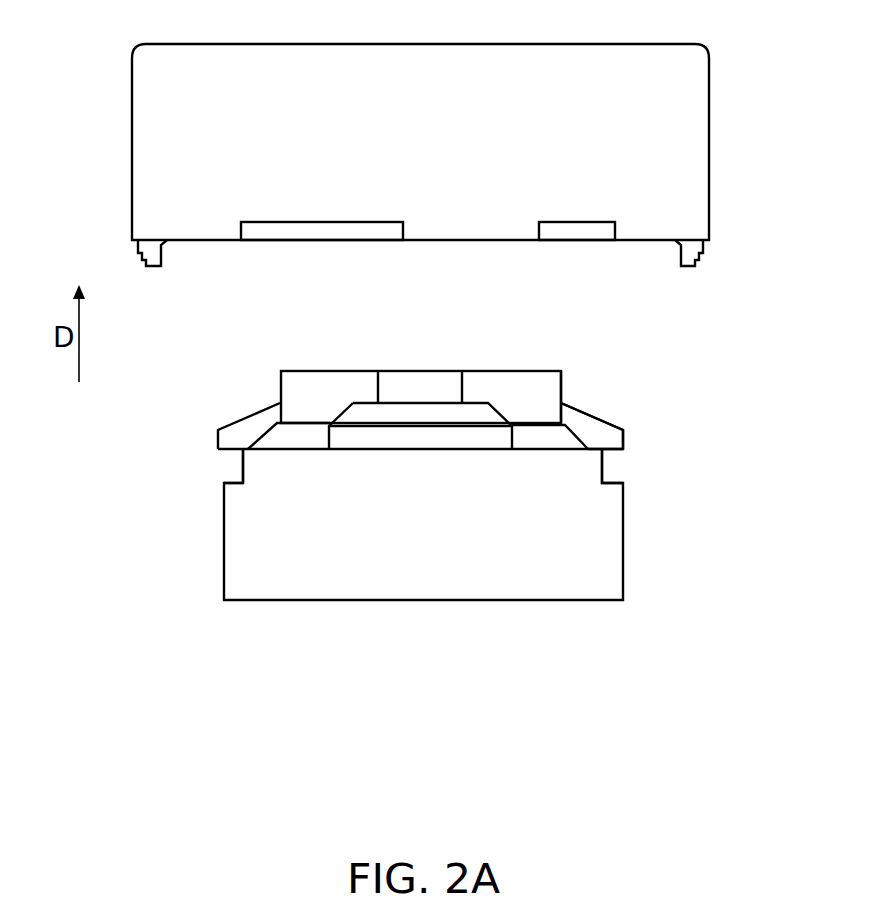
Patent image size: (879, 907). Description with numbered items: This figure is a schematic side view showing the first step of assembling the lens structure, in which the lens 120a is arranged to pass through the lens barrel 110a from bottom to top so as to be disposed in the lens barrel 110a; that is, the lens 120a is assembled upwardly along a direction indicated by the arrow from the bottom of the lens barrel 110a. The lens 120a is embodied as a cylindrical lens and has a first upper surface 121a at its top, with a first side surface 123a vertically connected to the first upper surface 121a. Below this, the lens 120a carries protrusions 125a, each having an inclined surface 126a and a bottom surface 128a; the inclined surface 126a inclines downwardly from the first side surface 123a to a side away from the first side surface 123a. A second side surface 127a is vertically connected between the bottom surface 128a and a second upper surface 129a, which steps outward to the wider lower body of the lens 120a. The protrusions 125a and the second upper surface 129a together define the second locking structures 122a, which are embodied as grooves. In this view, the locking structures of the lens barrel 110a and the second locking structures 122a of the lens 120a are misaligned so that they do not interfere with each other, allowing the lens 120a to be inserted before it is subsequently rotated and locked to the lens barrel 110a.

The lens barrel 110a is at (678, 134).
The lens 120a is at (592, 642).
The first upper surface 121a is at (530, 364).
The second locking structures 122a is at (612, 473).
The first side surface 123a is at (565, 387).
The protrusions 125a is at (727, 388).
The inclined surface 126a is at (605, 416).
The second side surface 127a is at (241, 460).
The bottom surface 128a is at (612, 455).
The second upper surface 129a is at (239, 477).